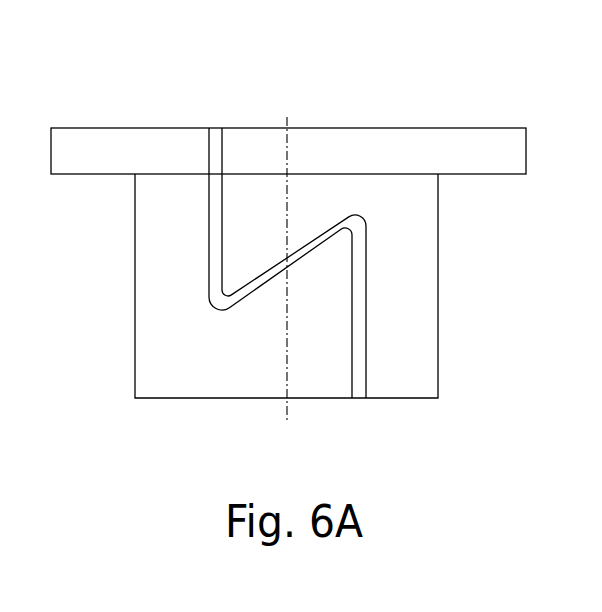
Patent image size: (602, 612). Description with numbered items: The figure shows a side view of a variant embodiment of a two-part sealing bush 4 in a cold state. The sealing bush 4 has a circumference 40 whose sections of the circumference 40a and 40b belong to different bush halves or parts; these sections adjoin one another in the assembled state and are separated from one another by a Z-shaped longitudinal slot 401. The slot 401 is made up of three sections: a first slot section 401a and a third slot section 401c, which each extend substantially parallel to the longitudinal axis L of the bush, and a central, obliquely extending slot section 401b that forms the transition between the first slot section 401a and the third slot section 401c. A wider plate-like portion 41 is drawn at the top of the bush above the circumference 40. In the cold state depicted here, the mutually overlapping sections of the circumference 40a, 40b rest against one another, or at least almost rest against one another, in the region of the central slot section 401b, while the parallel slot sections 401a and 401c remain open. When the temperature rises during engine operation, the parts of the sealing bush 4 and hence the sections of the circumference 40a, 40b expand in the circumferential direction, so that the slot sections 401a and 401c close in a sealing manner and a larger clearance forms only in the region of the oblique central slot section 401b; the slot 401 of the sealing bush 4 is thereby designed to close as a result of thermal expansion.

The sealing bush 4 is at (506, 118).
The circumference 40 is at (439, 399).
The section of the circumference 40a is at (423, 205).
The section of the circumference 40b is at (152, 267).
The top plate 41 is at (90, 128).
The longitudinal slot 401 is at (210, 128).
The first slot section 401a is at (208, 202).
The central slot section 401b is at (268, 283).
The third slot section 401c is at (362, 392).
The longitudinal axis L is at (289, 117).